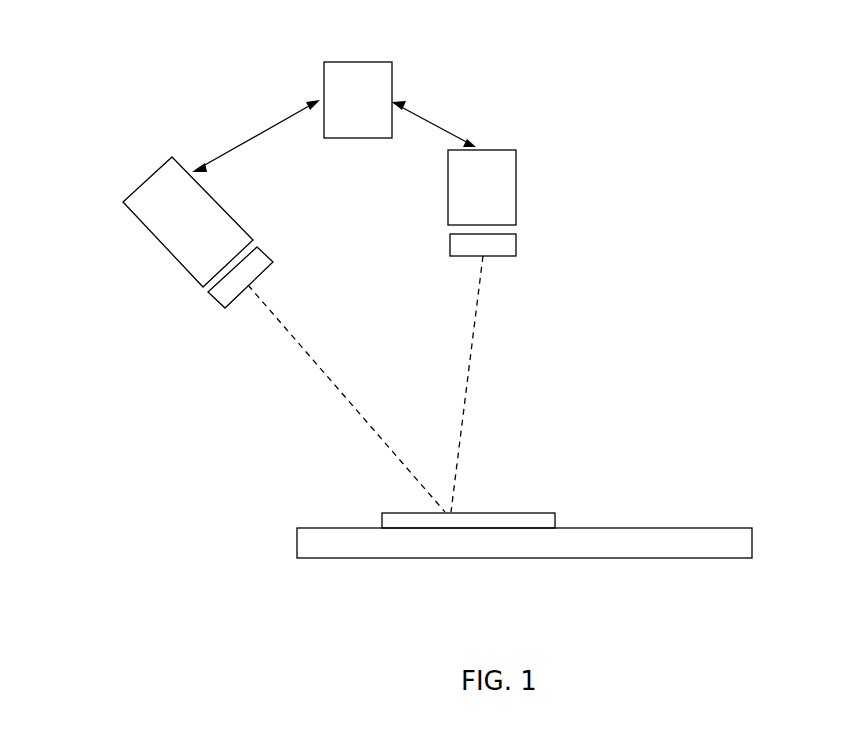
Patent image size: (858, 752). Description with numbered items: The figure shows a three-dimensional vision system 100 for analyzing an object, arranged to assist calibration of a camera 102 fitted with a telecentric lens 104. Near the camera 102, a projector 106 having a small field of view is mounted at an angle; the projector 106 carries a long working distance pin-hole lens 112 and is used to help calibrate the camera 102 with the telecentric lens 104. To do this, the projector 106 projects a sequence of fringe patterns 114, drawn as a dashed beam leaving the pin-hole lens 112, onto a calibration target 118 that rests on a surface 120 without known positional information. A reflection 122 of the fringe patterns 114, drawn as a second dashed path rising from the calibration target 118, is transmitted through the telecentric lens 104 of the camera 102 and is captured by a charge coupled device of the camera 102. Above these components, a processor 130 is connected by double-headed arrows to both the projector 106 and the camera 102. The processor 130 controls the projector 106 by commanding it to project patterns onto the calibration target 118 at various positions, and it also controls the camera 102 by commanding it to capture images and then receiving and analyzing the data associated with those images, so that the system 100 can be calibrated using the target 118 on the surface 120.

The system 100 is at (110, 103).
The camera 102 is at (516, 165).
The telecentric lens 104 is at (516, 243).
The projector 106 is at (203, 185).
The long working distance pin-hole lens 112 is at (258, 255).
The fringe patterns 114 is at (325, 370).
The calibration target 118 is at (550, 514).
The surface 120 is at (745, 528).
The reflection 122 is at (475, 337).
The processor 130 is at (392, 78).